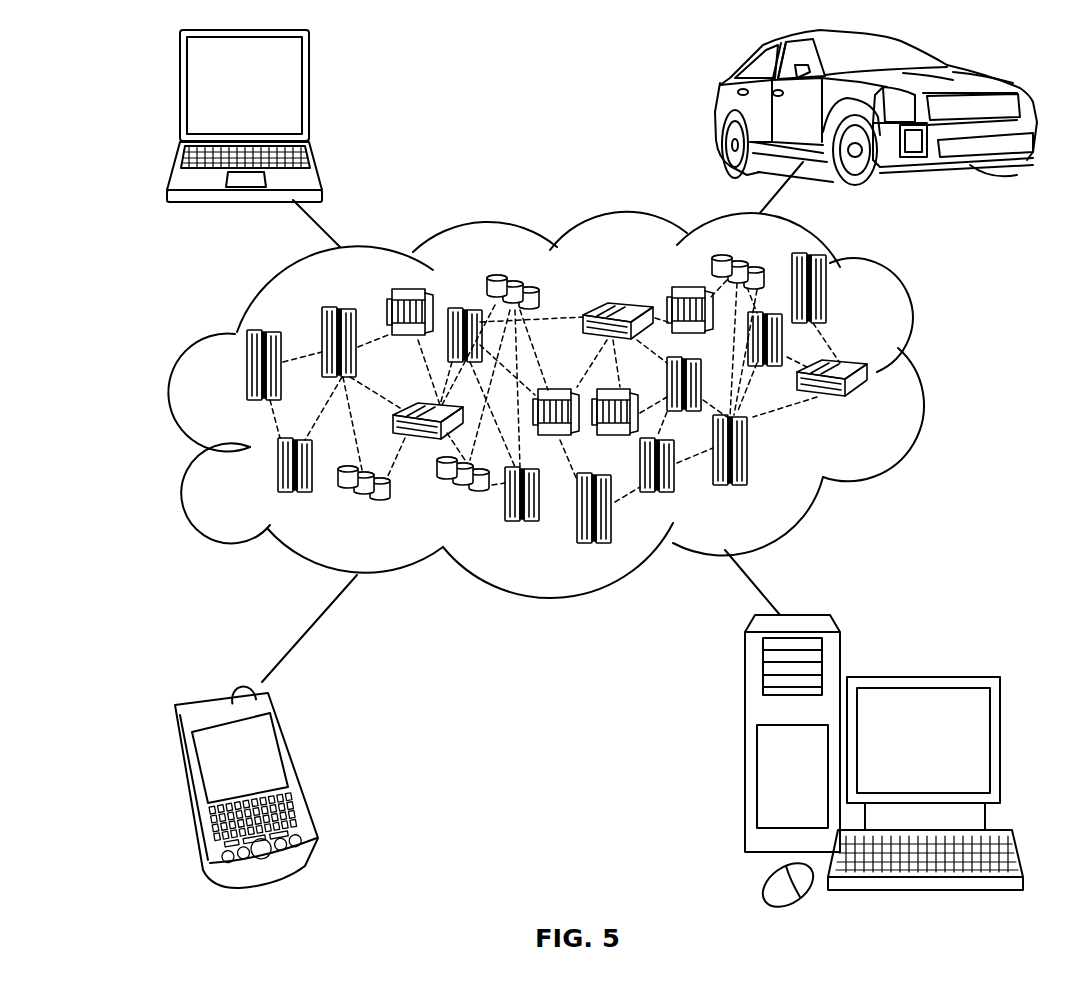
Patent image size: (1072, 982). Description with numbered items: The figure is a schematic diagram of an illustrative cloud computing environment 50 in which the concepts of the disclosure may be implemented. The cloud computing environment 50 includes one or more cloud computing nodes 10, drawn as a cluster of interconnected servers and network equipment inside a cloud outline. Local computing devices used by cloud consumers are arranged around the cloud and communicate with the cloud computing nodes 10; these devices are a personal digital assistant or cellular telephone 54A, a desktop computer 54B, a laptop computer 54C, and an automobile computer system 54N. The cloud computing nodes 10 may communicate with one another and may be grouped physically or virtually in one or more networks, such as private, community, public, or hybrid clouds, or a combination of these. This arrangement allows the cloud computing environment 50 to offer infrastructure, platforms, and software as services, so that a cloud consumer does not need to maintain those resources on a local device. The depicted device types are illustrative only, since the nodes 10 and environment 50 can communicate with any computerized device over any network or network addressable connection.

The cloud computing environment 50 is at (922, 373).
The cloud computing node 10 is at (866, 411).
The personal digital assistant or cellular telephone 54A is at (300, 772).
The desktop computer 54B is at (922, 675).
The laptop computer 54C is at (308, 92).
The automobile computer system 54N is at (717, 110).